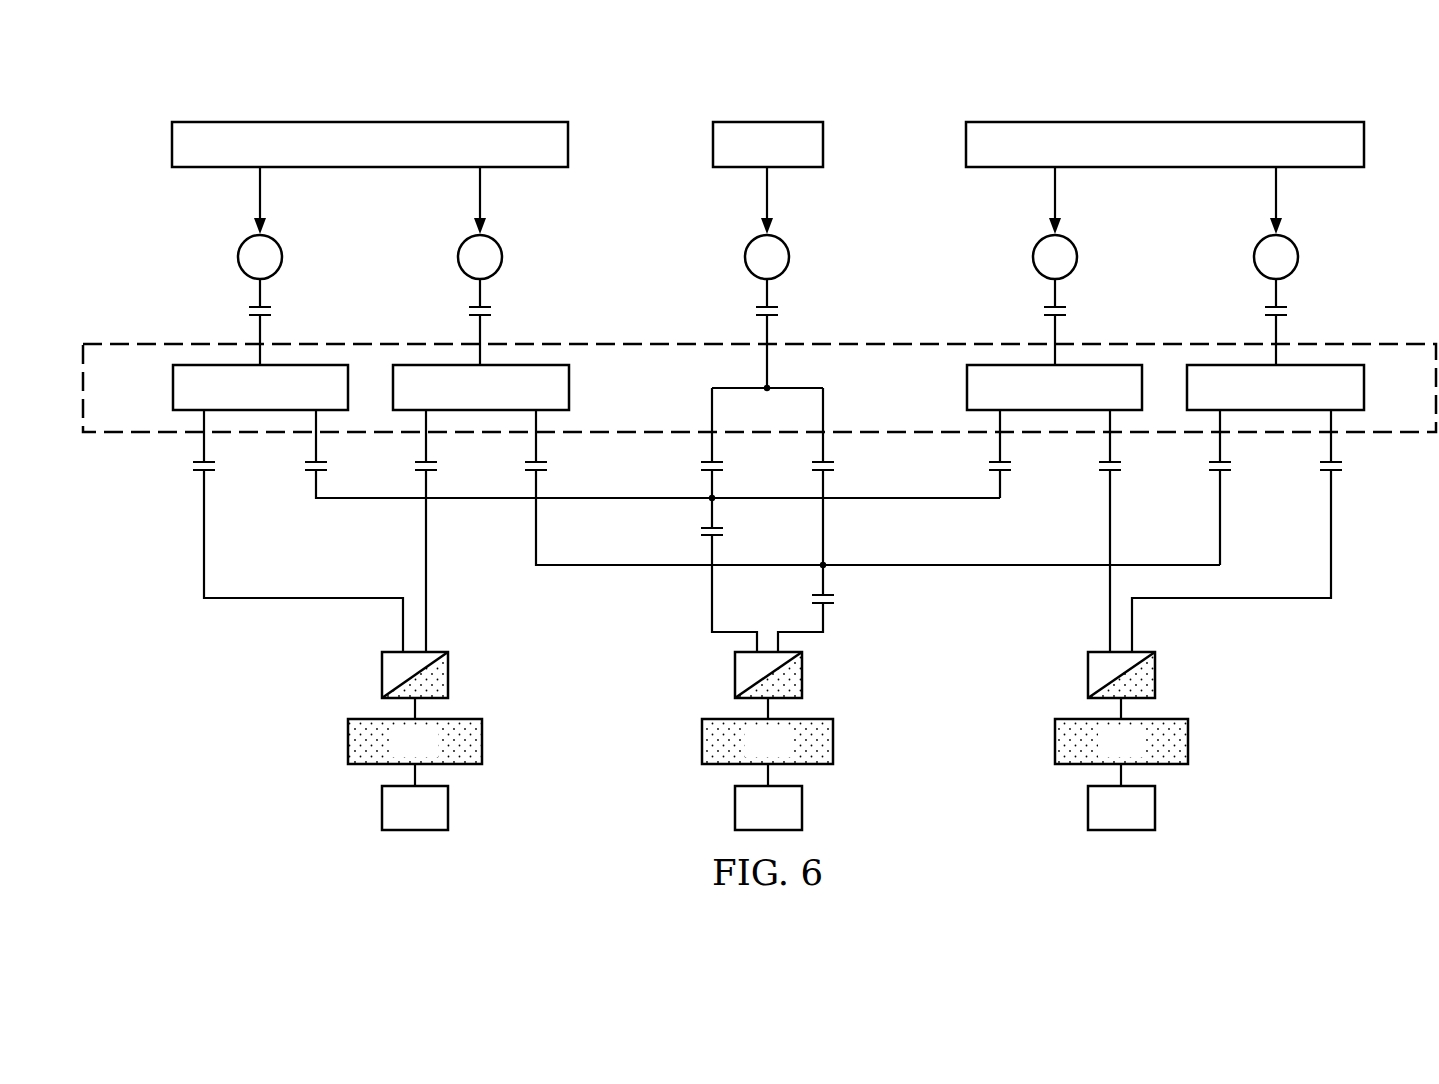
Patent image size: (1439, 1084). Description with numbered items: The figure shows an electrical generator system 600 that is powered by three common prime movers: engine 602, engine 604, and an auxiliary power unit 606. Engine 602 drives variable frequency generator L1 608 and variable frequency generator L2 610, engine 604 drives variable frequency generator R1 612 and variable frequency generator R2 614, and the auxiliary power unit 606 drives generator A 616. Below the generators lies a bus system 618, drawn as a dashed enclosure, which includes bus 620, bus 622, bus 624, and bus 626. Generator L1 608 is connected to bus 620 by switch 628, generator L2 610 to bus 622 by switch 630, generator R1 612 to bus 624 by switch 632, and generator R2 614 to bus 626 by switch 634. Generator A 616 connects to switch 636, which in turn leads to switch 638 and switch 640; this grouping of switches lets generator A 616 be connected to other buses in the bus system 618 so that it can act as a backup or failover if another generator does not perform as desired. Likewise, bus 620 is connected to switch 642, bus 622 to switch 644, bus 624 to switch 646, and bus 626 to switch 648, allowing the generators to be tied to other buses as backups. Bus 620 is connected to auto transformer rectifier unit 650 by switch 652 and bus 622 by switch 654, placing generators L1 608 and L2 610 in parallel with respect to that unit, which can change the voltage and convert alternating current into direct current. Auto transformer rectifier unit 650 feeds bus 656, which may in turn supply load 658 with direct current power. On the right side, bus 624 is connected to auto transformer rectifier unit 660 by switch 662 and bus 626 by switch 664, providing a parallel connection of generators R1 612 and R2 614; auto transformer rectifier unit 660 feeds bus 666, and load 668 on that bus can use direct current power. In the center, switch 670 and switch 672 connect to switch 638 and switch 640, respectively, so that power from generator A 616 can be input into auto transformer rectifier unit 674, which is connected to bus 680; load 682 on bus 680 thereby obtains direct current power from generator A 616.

The electrical generator system 600 is at (428, 64).
The engine 602 is at (371, 121).
The engine 604 is at (1165, 121).
The auxiliary power unit (APU) 606 is at (757, 121).
The variable frequency generator (L1) 608 is at (240, 257).
The variable frequency generator (L2) 610 is at (460, 257).
The variable frequency generator (R1) 612 is at (1075, 257).
The variable frequency generator (R2) 614 is at (1296, 257).
The generator (A) 616 is at (747, 257).
The bus system 618 is at (603, 333).
The bus 620 is at (172, 390).
The bus 622 is at (570, 390).
The bus 624 is at (967, 390).
The bus 626 is at (1364, 390).
The switch 628 is at (250, 313).
The switch 630 is at (470, 313).
The switch 632 is at (1064, 313).
The switch 634 is at (1286, 313).
The switch 636 is at (757, 313).
The switch 638 is at (701, 466).
The switch 640 is at (834, 466).
The switch 642 is at (305, 466).
The switch 644 is at (525, 466).
The switch 646 is at (1011, 466).
The switch 648 is at (1231, 466).
The auto transformer rectifier unit 650 is at (381, 675).
The switch 652 is at (193, 466).
The switch 654 is at (415, 466).
The bus 656 is at (347, 742).
The load 658 is at (381, 808).
The auto transformer rectifier unit 660 is at (1156, 675).
The switch 662 is at (1121, 466).
The switch 664 is at (1342, 466).
The bus 666 is at (1189, 742).
The load 668 is at (1156, 808).
The switch 670 is at (701, 532).
The switch 672 is at (834, 599).
The auto transformer rectifier unit 674 is at (734, 675).
The bus 680 is at (701, 742).
The load 682 is at (734, 808).